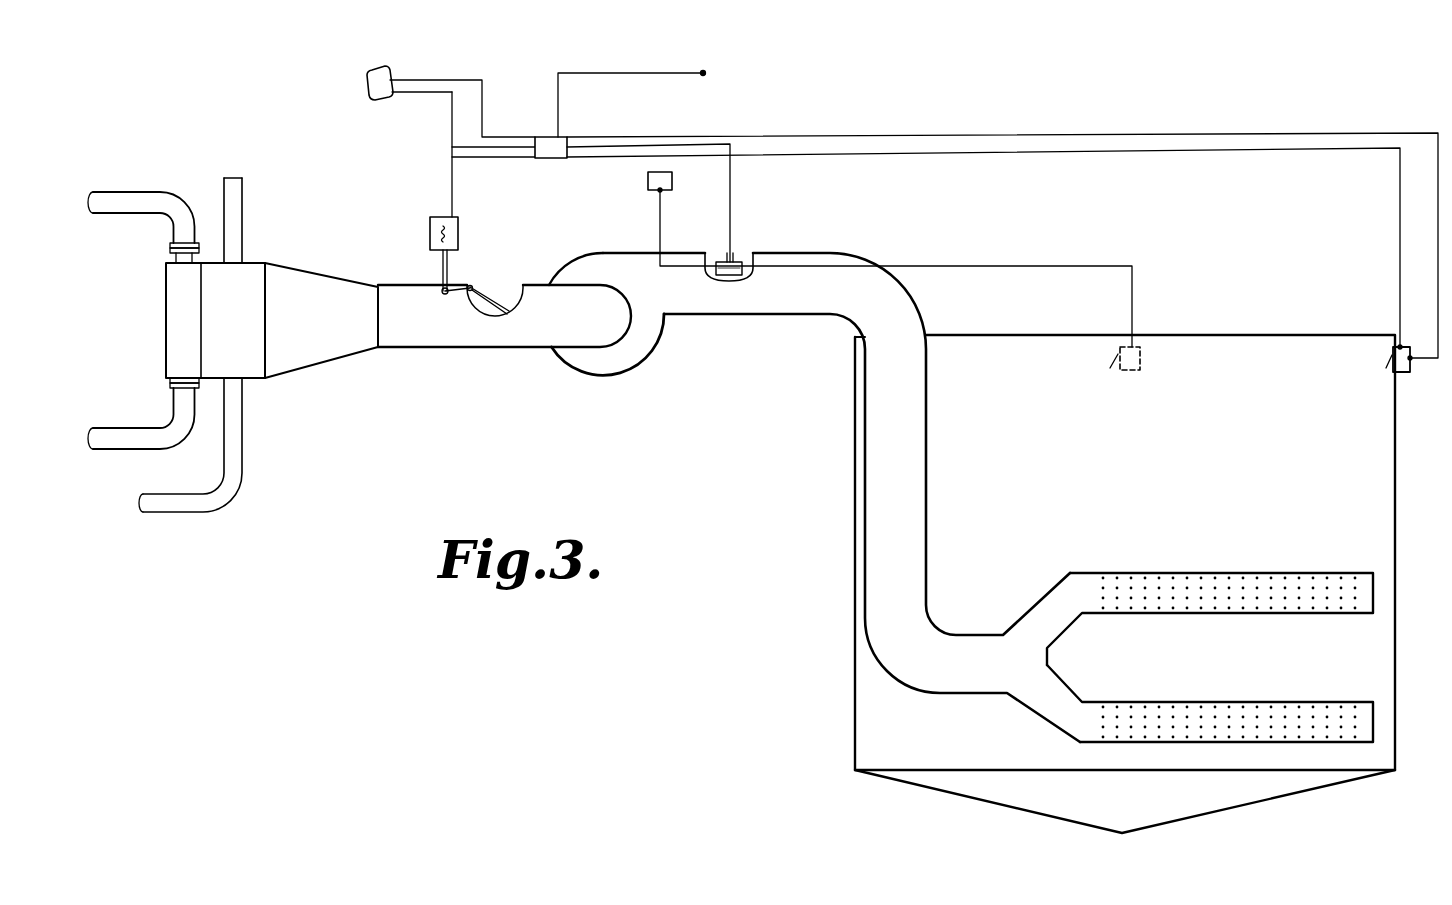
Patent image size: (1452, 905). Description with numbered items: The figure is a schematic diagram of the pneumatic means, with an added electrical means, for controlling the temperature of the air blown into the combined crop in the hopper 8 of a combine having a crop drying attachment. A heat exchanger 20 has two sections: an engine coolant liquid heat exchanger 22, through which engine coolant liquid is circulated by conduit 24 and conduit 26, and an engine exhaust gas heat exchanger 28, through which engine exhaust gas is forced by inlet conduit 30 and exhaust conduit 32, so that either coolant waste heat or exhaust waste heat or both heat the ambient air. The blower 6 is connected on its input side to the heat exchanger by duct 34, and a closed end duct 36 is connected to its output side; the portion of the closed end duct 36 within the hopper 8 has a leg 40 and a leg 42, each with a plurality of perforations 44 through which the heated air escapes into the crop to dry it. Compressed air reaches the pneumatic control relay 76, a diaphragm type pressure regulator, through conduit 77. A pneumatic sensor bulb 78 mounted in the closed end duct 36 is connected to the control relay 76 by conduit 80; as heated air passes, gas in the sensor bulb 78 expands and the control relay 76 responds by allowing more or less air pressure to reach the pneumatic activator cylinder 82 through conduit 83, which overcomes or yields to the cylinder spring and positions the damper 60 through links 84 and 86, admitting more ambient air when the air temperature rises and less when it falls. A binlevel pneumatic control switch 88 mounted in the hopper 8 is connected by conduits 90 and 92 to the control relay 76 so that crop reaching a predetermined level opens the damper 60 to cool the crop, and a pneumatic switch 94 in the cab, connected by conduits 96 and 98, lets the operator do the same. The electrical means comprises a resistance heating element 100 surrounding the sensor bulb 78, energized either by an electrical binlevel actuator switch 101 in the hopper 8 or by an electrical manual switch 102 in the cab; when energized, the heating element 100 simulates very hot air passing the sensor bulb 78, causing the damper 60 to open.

The blower 6 is at (614, 364).
The hopper 8 is at (1156, 500).
The heat exchanger 20 is at (281, 238).
The engine coolant liquid heat exchanger 22 is at (168, 357).
The conduit 24 is at (122, 438).
The conduit 26 is at (145, 190).
The engine exhaust gas heat exchanger 28 is at (262, 326).
The inlet conduit 30 is at (242, 488).
The exhaust conduit 32 is at (243, 186).
The duct 34 is at (310, 272).
The closed end duct 36 is at (926, 416).
The leg 40 is at (1342, 702).
The leg 42 is at (1282, 572).
The perforations 44 is at (1147, 600).
The damper 60 is at (510, 296).
The pneumatic control relay 76 is at (556, 156).
The conduit 77 is at (656, 74).
The pneumatic sensor bulb 78 is at (722, 256).
The conduit 80 is at (731, 210).
The pneumatic activator cylinder 82 is at (460, 236).
The conduit 83 is at (450, 188).
The link 84 is at (442, 262).
The link 86 is at (452, 296).
The binlevel pneumatic control switch 88 is at (1410, 372).
The conduit 90 is at (890, 138).
The conduit 92 is at (992, 152).
The pneumatic switch 94 is at (382, 64).
The conduit 96 is at (428, 94).
The conduit 98 is at (452, 80).
The resistance heating element 100 is at (742, 280).
The electrical binlevel actuator switch 101 is at (1142, 364).
The electrical manual switch 102 is at (648, 184).